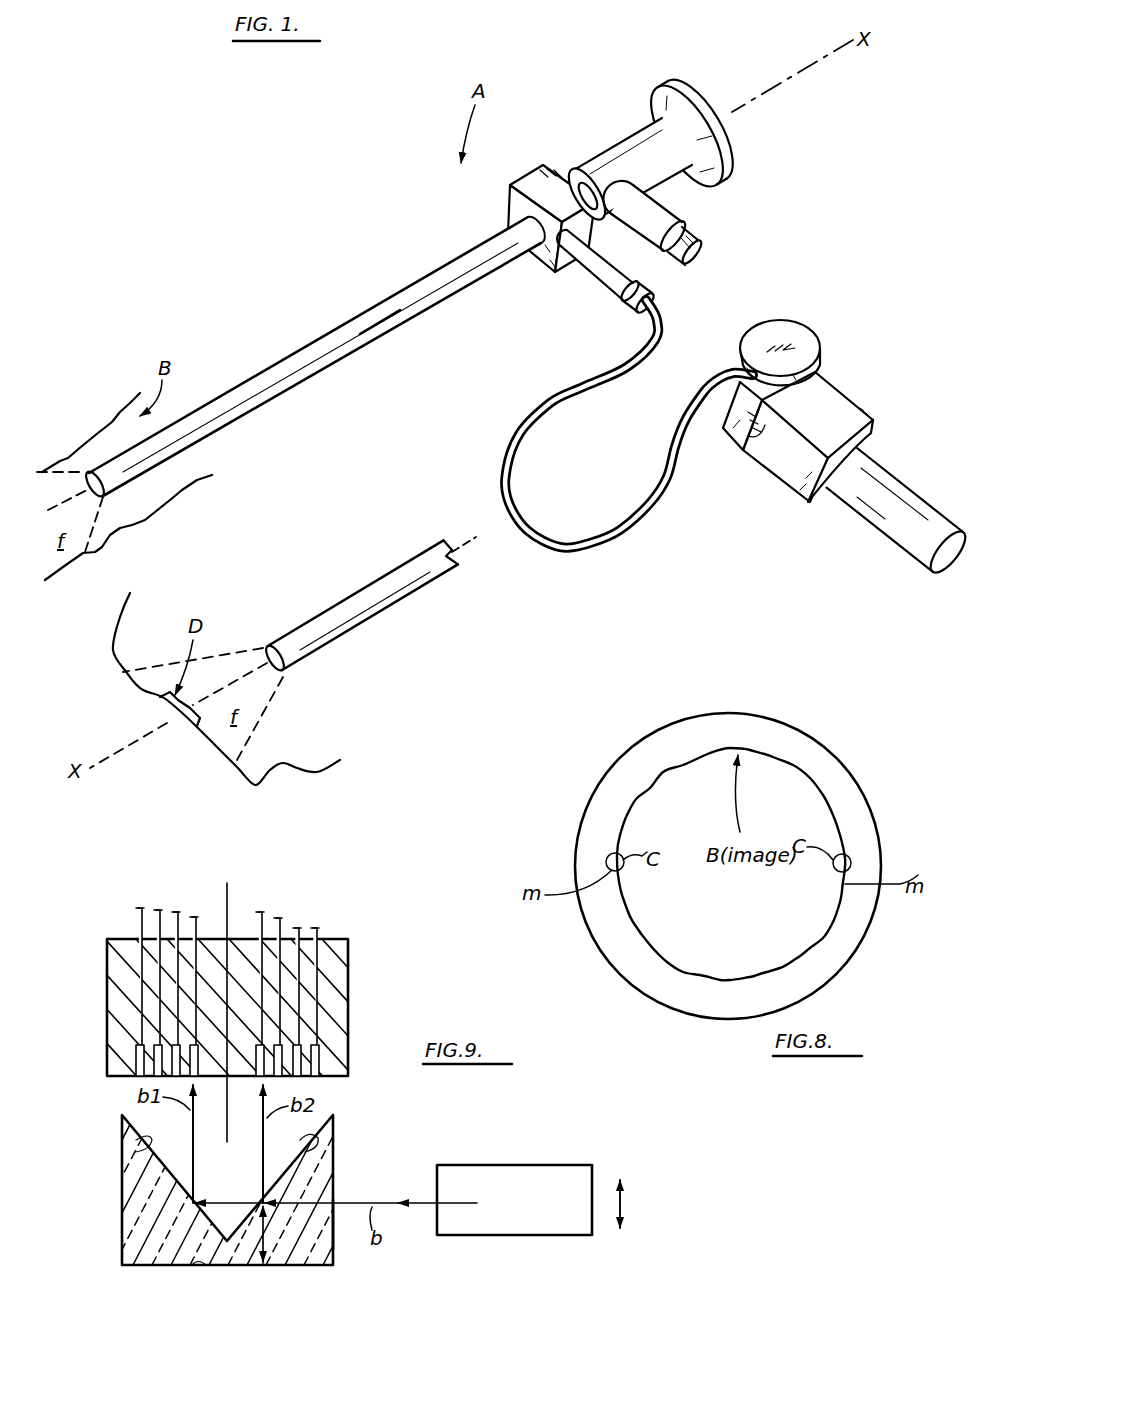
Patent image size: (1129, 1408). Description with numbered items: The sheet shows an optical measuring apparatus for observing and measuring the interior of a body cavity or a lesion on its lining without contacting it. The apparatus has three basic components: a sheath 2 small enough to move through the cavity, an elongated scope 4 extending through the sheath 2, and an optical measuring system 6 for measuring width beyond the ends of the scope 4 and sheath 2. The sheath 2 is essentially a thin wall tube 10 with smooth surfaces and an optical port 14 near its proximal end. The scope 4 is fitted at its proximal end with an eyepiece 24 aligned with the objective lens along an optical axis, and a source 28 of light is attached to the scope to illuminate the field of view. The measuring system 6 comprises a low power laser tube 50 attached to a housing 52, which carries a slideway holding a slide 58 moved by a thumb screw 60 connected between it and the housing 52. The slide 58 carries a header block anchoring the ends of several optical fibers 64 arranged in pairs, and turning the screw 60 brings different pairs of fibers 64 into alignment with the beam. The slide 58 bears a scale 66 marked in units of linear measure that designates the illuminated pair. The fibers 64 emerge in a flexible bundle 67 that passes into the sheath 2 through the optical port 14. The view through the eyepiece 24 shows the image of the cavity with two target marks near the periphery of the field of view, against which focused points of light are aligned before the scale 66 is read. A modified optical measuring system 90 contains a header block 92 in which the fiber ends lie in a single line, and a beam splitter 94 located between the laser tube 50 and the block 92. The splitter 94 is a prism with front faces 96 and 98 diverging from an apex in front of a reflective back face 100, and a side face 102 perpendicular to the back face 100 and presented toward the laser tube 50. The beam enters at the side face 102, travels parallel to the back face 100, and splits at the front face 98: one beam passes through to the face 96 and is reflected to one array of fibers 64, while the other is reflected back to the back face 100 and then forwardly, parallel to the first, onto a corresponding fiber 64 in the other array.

In FIG. 1, the sheath 2 is at (305, 385).
In FIG. 1, the elongated scope 4 is at (616, 146).
In FIG. 1, the optical measuring system 6 is at (828, 428).
In FIG. 1, the thin wall tube 10 is at (383, 322).
In FIG. 1, the optical port 14 is at (593, 270).
In FIG. 1, the eyepiece 24 is at (700, 92).
In FIG. 8, the eyepiece 24 is at (848, 772).
In FIG. 1, the source of light 28 is at (698, 243).
In FIG. 1, the laser tube 50 is at (880, 522).
In FIG. 9, the laser tube 50 is at (517, 1232).
In FIG. 1, the housing 52 is at (790, 468).
In FIG. 1, the slide 58 is at (733, 428).
In FIG. 1, the thumb screw 60 is at (783, 325).
In FIG. 9, the optical fibers 64 is at (158, 908).
In FIG. 1, the scale 66 is at (758, 433).
In FIG. 1, the flexible bundle 67 is at (570, 547).
In FIG. 9, the modified optical measuring system 90 is at (237, 964).
In FIG. 9, the header block 92 is at (340, 1012).
In FIG. 9, the beam splitter 94 is at (140, 1227).
In FIG. 9, the front face 96 is at (150, 1138).
In FIG. 9, the front face 98 is at (307, 1136).
In FIG. 9, the reflective back face 100 is at (198, 1262).
In FIG. 9, the side face 102 is at (333, 1232).